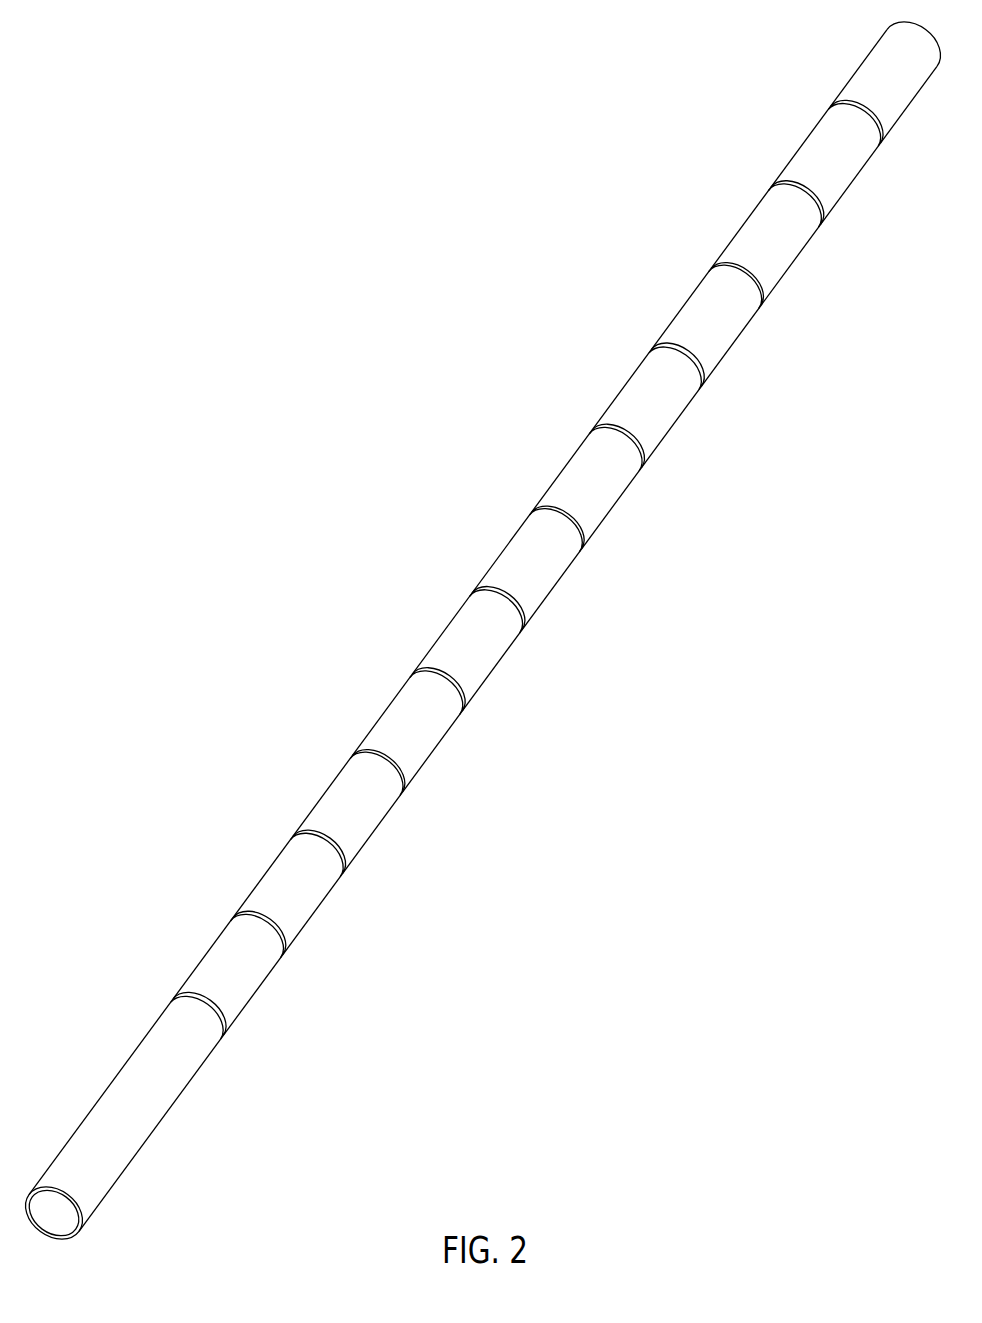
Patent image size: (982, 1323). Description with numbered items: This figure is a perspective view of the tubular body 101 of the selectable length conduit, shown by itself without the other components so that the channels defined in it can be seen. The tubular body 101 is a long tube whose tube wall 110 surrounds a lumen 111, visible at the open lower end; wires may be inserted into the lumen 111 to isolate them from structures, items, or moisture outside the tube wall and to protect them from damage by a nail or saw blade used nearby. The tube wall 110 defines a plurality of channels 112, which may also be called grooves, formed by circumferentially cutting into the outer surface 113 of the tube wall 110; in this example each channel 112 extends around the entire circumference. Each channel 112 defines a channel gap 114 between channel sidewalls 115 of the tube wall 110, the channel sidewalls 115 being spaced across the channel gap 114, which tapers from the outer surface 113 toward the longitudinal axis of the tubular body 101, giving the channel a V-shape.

The tubular body 101 is at (477, 647).
The tube wall 110 is at (572, 458).
The lumen 111 is at (53, 1216).
The channel 112 is at (583, 569).
The outer surface 113 is at (630, 477).
The channel gap 114 is at (543, 509).
The channel sidewalls 115 is at (559, 519).